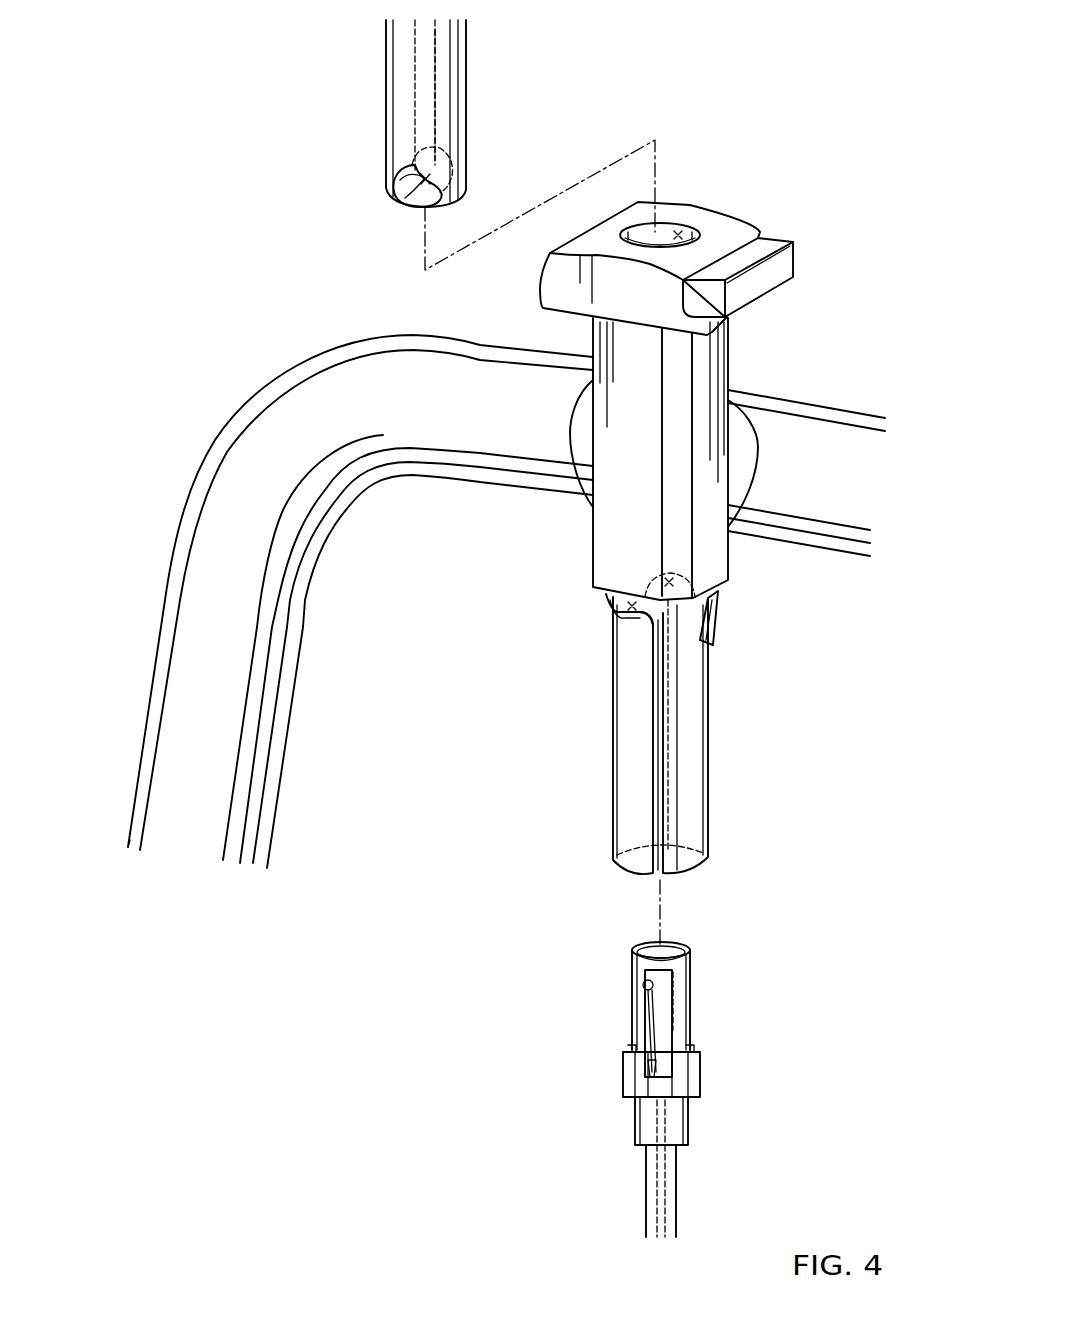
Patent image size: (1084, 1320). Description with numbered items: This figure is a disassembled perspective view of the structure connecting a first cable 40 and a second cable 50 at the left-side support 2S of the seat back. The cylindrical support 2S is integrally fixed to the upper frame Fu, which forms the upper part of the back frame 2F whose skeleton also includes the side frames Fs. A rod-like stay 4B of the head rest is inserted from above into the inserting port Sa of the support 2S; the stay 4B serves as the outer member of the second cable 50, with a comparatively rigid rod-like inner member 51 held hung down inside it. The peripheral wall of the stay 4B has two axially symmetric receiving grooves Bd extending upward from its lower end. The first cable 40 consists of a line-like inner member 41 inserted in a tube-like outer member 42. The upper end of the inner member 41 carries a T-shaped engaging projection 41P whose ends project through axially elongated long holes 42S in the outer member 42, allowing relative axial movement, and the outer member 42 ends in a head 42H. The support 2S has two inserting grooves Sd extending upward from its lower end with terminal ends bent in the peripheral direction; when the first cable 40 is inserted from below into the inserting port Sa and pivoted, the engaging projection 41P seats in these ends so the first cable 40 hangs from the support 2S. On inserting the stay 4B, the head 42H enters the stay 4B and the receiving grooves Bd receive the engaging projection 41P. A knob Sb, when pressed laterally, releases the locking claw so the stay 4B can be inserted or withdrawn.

The stay 4B is at (452, 43).
The inner member 51 is at (425, 70).
The second cable 50 is at (592, 12).
The receiving groove Bd is at (450, 166).
The inserting port Sa is at (677, 232).
The knob Sb is at (777, 273).
The inserting groove Sd is at (610, 612).
The back frame 2F is at (282, 420).
The upper frame Fu is at (465, 445).
The side frame Fs is at (195, 668).
The support 2S is at (683, 695).
The first cable 40 is at (665, 1083).
The inner member 41 is at (655, 1010).
The engaging projection 41P is at (645, 985).
The outer member 42 is at (672, 1167).
The head 42H is at (687, 943).
The long hole 42S is at (663, 1037).